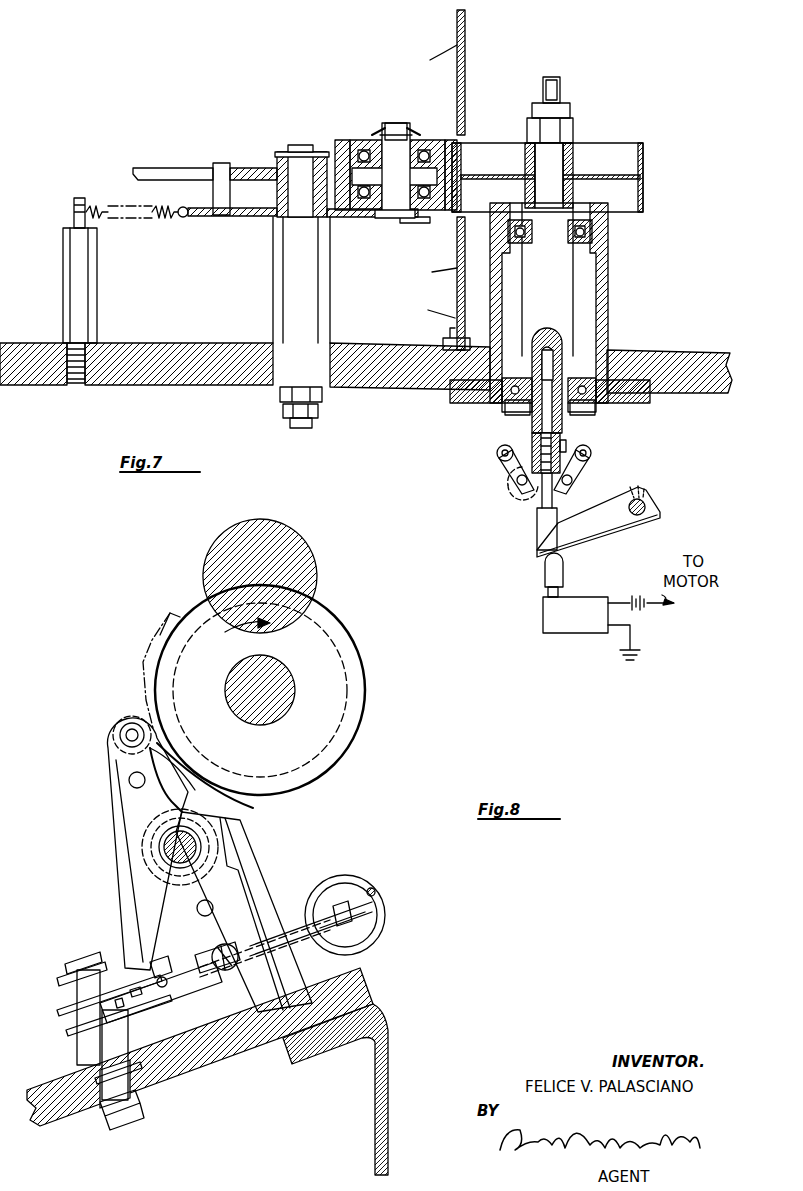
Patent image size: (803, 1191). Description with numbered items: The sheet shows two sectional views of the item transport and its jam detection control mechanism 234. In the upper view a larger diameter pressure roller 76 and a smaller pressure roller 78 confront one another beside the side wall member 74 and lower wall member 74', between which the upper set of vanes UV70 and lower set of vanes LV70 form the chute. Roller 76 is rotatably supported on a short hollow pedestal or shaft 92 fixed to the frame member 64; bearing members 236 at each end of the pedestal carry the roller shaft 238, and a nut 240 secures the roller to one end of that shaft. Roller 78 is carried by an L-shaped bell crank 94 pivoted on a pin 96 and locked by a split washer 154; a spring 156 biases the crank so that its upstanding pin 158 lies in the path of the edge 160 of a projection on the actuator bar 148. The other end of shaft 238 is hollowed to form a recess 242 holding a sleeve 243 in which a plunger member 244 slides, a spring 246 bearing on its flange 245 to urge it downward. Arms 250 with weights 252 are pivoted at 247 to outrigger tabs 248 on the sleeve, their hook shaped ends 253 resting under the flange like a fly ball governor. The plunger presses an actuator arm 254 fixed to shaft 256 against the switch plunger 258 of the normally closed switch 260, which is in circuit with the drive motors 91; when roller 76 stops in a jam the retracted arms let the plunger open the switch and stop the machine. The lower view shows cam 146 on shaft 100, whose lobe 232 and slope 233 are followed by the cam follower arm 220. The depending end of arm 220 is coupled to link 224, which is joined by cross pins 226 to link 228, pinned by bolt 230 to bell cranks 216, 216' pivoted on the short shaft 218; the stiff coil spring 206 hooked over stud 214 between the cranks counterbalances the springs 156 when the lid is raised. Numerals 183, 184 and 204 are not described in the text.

In FIG. 7, the frame member 64 is at (165, 345).
In FIG. 8, the frame member 64 is at (378, 990).
In FIG. 7, the side wall member 74 is at (470, 180).
In FIG. 7, the lower wall forming member 74' is at (429, 311).
In FIG. 7, the pressure roller 76 is at (624, 150).
In FIG. 7, the pressure roller 78 is at (340, 140).
In FIG. 7, the drive motor 91 is at (660, 604).
In FIG. 7, the hollow pedestal or shaft 92 is at (610, 282).
In FIG. 7, the bell crank 94 is at (345, 220).
In FIG. 7, the pin 96 is at (274, 291).
In FIG. 8, the shaft 100 is at (316, 685).
In FIG. 8, the cam 146 is at (362, 723).
In FIG. 7, the actuator bar 148 is at (164, 167).
In FIG. 7, the split washer 154 is at (283, 150).
In FIG. 7, the spring 156 is at (165, 220).
In FIG. 7, the upstanding pin 158 is at (215, 217).
In FIG. 7, the edge 160 is at (229, 163).
In FIG. 8, the lever 183 is at (245, 852).
In FIG. 8, the pivot shaft 184 is at (166, 847).
In FIG. 8, the cam 204 is at (150, 639).
In FIG. 8, the coil spring 206 is at (355, 880).
In FIG. 8, the stud 214 is at (376, 895).
In FIG. 8, the bell crank 216 is at (286, 925).
In FIG. 8, the bell crank 216' is at (373, 929).
In FIG. 8, the short shaft 218 is at (72, 960).
In FIG. 8, the cam follower arm 220 is at (120, 790).
In FIG. 8, the link 224 is at (156, 956).
In FIG. 8, the cross pins 226 is at (150, 958).
In FIG. 8, the link 228 is at (85, 1012).
In FIG. 8, the bolt 230 is at (72, 988).
In FIG. 8, the lobe 232 is at (150, 712).
In FIG. 8, the slope 233 is at (210, 798).
In FIG. 7, the jam detection control mechanism 234 is at (515, 546).
In FIG. 7, the bearing member 236 is at (593, 238).
In FIG. 7, the roller shaft 238 is at (560, 308).
In FIG. 7, the nut 240 is at (563, 104).
In FIG. 7, the cylindrical recess or chamber 242 is at (553, 352).
In FIG. 7, the sleeve 243 is at (530, 412).
In FIG. 7, the plunger member 244 is at (532, 438).
In FIG. 7, the flange 245 is at (566, 486).
In FIG. 7, the spring 246 is at (566, 444).
In FIG. 7, the pivot 247 is at (517, 483).
In FIG. 7, the outrigger tabs 248 is at (516, 498).
In FIG. 7, the arm 250 is at (512, 468).
In FIG. 7, the weight 252 is at (497, 453).
In FIG. 7, the hook shaped end 253 is at (540, 497).
In FIG. 7, the actuator arm 254 is at (628, 522).
In FIG. 7, the shaft 256 is at (647, 498).
In FIG. 7, the switch plunger 258 is at (545, 578).
In FIG. 7, the switch 260 is at (586, 625).
In FIG. 7, the upper set of vanes UV70 is at (418, 57).
In FIG. 7, the lower set of vanes LV70 is at (417, 277).